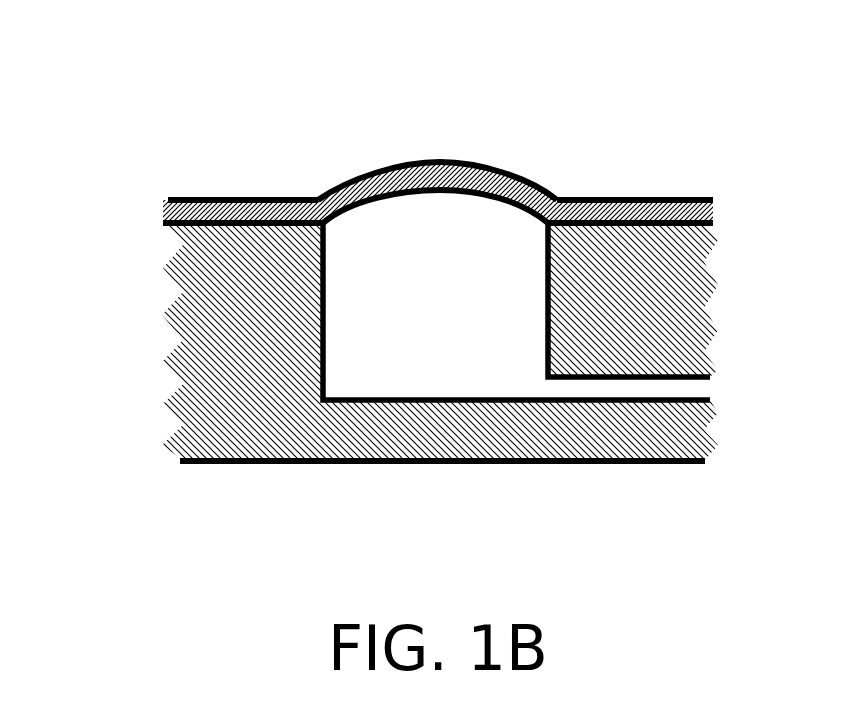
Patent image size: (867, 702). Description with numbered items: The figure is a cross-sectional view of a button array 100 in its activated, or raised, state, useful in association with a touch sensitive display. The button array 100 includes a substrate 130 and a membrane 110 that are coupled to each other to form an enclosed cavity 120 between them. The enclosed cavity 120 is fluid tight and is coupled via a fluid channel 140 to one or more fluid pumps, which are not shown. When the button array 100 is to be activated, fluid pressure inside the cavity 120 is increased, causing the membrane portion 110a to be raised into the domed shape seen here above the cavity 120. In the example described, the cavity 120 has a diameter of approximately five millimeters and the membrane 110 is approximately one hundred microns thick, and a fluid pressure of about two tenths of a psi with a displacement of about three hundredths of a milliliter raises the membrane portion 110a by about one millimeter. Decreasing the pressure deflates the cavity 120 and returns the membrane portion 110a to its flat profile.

The button array 100 is at (397, 289).
The membrane 110 is at (438, 138).
The membrane portion 110a is at (435, 162).
The enclosed cavity 120 is at (500, 400).
The substrate 130 is at (648, 222).
The fluid channel 140 is at (660, 400).